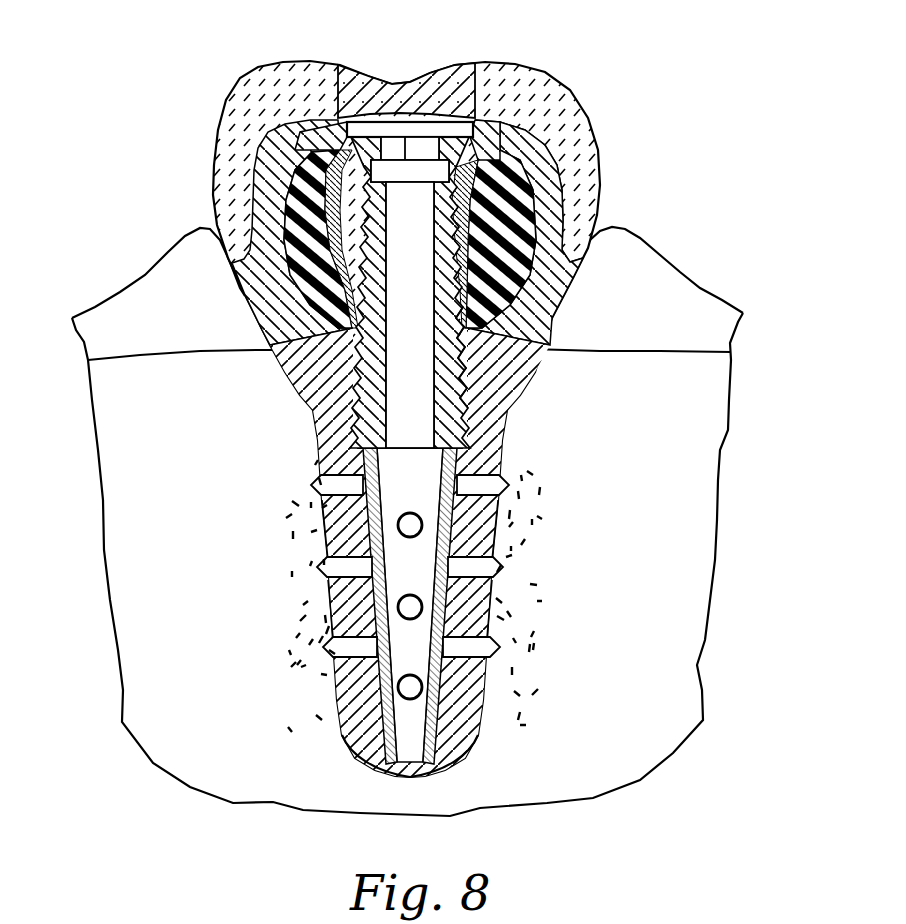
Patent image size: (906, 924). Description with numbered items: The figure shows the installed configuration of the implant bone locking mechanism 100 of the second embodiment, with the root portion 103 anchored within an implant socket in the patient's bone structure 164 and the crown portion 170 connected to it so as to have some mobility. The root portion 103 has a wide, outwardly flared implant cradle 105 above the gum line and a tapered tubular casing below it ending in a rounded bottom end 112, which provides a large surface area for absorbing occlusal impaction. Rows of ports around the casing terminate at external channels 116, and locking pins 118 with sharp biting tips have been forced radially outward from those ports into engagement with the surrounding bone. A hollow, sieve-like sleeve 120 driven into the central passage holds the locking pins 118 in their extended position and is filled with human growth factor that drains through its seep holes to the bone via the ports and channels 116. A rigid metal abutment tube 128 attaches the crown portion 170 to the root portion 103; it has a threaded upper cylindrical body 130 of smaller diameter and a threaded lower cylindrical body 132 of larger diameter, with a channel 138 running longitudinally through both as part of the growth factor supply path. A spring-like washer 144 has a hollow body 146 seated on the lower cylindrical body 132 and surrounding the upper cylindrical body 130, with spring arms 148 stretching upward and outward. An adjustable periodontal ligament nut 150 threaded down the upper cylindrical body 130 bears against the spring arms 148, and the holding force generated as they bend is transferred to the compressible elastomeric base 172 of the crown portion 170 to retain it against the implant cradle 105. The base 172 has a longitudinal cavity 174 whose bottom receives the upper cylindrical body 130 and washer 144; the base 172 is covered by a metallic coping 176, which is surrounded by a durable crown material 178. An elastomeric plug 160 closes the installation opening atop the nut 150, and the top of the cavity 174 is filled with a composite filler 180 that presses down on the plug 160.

The implant bone locking mechanism 100 is at (296, 380).
The root portion 103 is at (505, 533).
The implant cradle 105 is at (142, 273).
The rounded bottom end 112 is at (463, 758).
The external channel 116 is at (333, 605).
The locking pins 118 is at (311, 483).
The sleeve 120 is at (453, 602).
The abutment tube 128 is at (633, 291).
The upper cylindrical body 130 is at (480, 233).
The lower cylindrical body 132 is at (450, 395).
The channel 138 is at (206, 311).
The spring-like washer 144 is at (312, 220).
The hollow body 146 is at (527, 239).
The spring arms 148 is at (512, 162).
The adjustable periodontal ligament nut 150 is at (332, 133).
The plug 160 is at (433, 125).
The bone structure 164 is at (705, 375).
The crown portion 170 is at (584, 80).
The compressible elastomeric base 172 is at (545, 270).
The cavity 174 is at (480, 145).
The metallic coping 176 is at (275, 157).
The crown material 178 is at (548, 68).
The composite filler 180 is at (375, 78).